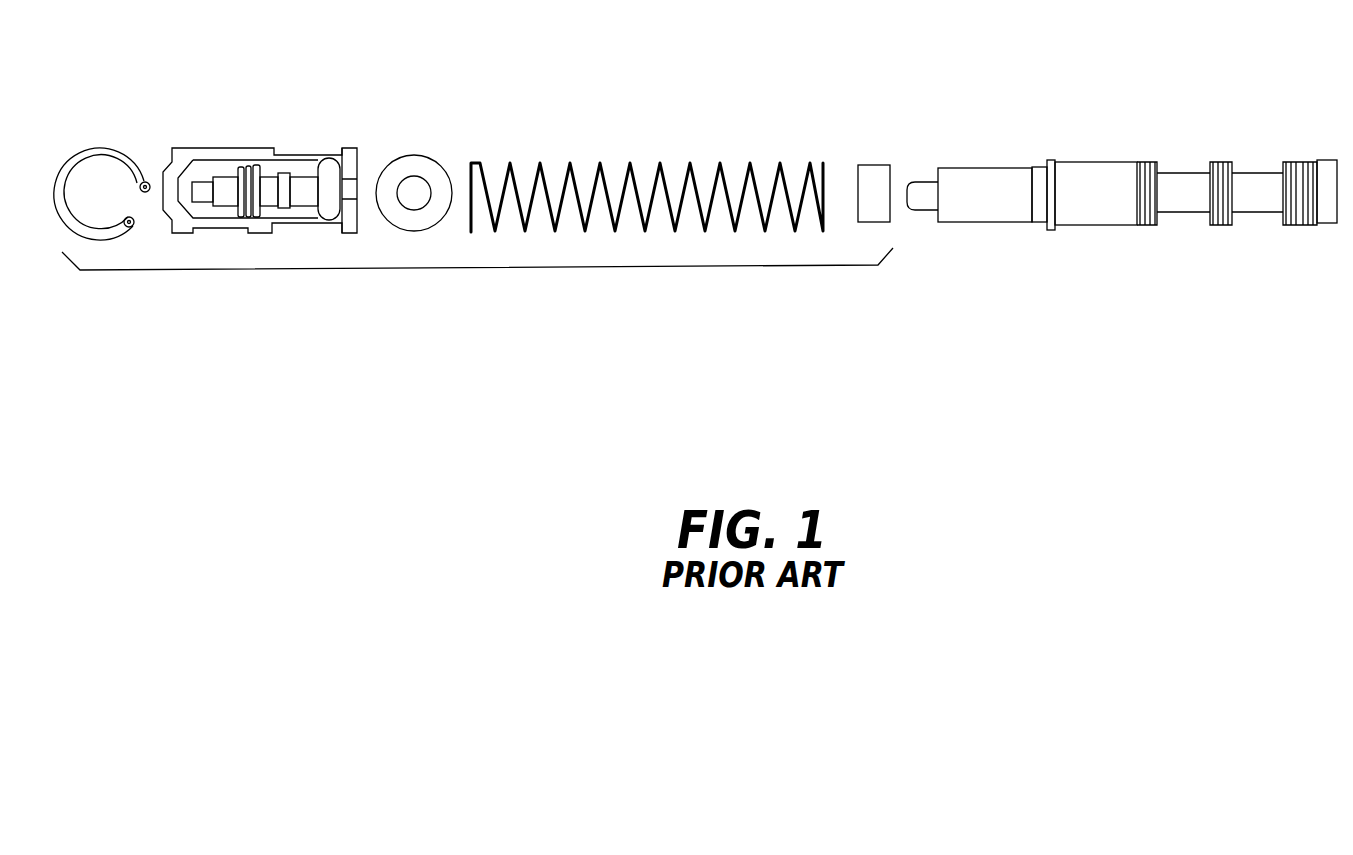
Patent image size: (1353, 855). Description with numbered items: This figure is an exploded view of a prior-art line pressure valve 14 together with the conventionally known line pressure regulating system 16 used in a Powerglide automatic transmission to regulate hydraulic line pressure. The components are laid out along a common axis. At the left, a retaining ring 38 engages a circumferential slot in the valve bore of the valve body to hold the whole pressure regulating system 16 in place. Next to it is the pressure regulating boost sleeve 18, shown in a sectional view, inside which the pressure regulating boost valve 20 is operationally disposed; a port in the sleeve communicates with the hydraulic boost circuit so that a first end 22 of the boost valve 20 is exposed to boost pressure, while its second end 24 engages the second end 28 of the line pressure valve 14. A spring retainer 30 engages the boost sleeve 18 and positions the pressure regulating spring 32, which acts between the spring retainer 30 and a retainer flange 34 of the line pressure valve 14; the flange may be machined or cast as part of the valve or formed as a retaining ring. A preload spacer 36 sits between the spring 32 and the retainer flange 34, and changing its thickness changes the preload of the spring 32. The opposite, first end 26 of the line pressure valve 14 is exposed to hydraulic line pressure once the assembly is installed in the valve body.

The line pressure valve 14 is at (1105, 175).
The line pressure regulating system 16 is at (445, 268).
The pressure regulating boost sleeve 18 is at (186, 151).
The pressure regulating boost valve 20 is at (296, 190).
The first end of the boost valve 22 is at (257, 189).
The second end of the boost valve 24 is at (334, 173).
The first end of the line pressure valve 26 is at (1317, 160).
The second end of the line pressure valve 28 is at (920, 183).
The spring retainer 30 is at (407, 172).
The pressure regulating spring 32 is at (658, 170).
The retainer flange 34 is at (1050, 164).
The preload spacer 36 is at (875, 175).
The retaining ring 38 is at (115, 146).